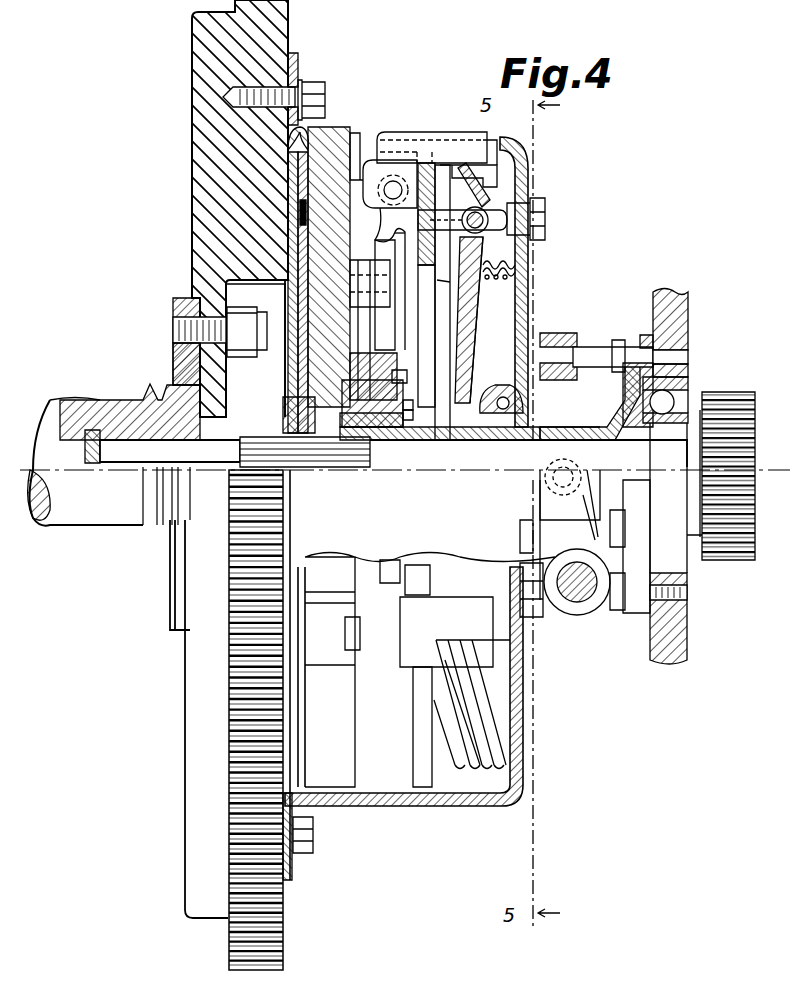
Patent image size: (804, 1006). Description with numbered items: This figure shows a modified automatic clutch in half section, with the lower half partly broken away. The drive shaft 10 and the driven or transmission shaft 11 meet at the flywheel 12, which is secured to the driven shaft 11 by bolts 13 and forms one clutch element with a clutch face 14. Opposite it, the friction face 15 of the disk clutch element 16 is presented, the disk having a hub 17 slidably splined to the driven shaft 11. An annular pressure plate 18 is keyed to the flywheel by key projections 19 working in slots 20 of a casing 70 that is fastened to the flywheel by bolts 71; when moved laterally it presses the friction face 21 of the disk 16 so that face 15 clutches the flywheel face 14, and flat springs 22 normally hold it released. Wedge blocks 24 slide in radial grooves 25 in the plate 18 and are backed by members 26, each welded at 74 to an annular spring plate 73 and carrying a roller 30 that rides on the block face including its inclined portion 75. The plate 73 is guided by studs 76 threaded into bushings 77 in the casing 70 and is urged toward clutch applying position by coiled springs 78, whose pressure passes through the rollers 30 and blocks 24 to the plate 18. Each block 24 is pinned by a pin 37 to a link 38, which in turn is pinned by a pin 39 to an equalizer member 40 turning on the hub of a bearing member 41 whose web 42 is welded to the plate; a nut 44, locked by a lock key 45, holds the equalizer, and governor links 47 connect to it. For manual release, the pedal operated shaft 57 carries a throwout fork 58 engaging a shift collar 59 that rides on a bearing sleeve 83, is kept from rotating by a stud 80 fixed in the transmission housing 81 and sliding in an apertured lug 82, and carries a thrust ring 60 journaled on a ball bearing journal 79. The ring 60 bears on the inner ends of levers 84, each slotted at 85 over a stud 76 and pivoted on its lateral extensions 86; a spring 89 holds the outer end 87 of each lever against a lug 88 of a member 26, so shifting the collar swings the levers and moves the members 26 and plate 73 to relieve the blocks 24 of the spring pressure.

The drive shaft 10 is at (112, 520).
The driven shaft 11 is at (452, 458).
The flywheel 12 is at (208, 209).
The bolts 13 is at (244, 354).
The clutch face 14 is at (303, 214).
The friction face 15 is at (296, 166).
The clutch element 16 is at (268, 275).
The hub 17 is at (280, 417).
The clutch element 18 is at (338, 250).
The key projections 19 is at (352, 128).
The slots 20 is at (360, 134).
The friction face 21 is at (305, 188).
The flat springs 22 is at (302, 128).
The wedge blocks 24 is at (387, 255).
The grooves 25 is at (378, 150).
The members 26 is at (420, 140).
The roller 30 is at (372, 190).
The pin 37 is at (440, 283).
The link 38 is at (372, 325).
The pin 39 is at (410, 378).
The equalizer member 40 is at (365, 444).
The bearing member 41 is at (370, 440).
The web or disk portion 42 is at (324, 462).
The nut 44 is at (412, 403).
The lock key 45 is at (413, 416).
The link 47 is at (378, 356).
The pedal operated shaft 57 is at (580, 590).
The throwout fork portion 58 is at (545, 534).
The shift collar 59 is at (555, 415).
The thrust ring 60 is at (490, 385).
The casing 70 is at (524, 152).
The bolts 71 is at (316, 84).
The annular spring plate 73 is at (440, 275).
The welding 74 is at (430, 170).
The inclined portion 75 is at (402, 230).
The studs 76 is at (465, 319).
The threaded bushings 77 is at (527, 235).
The coiled springs 78 is at (477, 775).
The ball bearing journal 79 is at (508, 390).
The stud 80 is at (597, 355).
The transmission housing 81 is at (685, 332).
The apertured lug 82 is at (556, 336).
The bearing sleeve 83 is at (482, 442).
The levers 84 is at (484, 312).
The slot 85 is at (486, 203).
The lateral extensions 86 is at (462, 220).
The outer end 87 is at (468, 164).
The lug 88 is at (492, 180).
The spring 89 is at (516, 272).